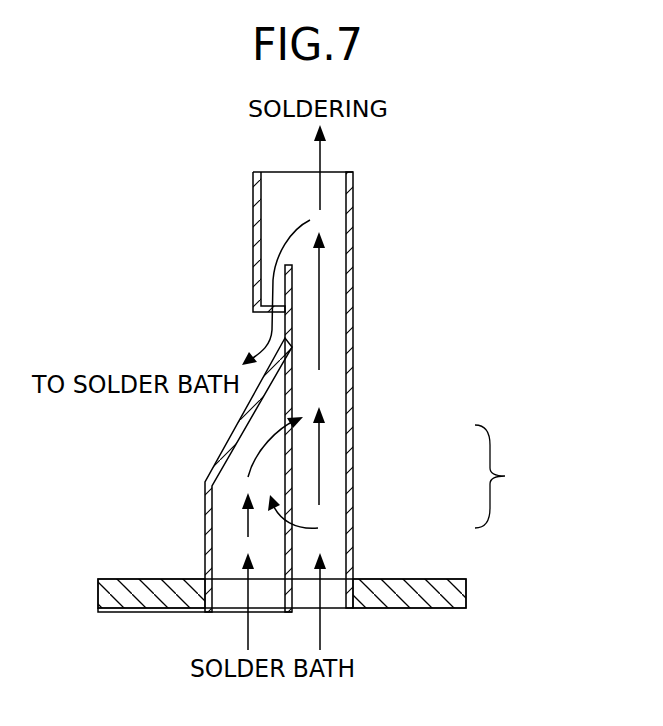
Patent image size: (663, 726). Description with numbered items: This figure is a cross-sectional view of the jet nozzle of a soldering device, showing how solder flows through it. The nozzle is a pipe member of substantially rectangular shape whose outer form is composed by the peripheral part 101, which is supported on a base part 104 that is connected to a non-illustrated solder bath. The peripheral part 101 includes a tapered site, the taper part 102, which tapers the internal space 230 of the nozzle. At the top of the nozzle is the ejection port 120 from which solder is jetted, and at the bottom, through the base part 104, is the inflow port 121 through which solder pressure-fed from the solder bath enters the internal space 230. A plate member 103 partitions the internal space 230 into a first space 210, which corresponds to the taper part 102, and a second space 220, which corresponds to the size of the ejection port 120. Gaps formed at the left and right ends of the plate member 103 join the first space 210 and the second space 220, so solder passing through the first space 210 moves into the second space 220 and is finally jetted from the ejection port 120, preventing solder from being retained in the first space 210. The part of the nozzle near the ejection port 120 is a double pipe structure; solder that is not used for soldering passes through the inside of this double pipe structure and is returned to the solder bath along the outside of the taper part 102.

The peripheral part 101 is at (353, 218).
The taper part 102 is at (222, 452).
The plate member 103 is at (292, 394).
The base part 104 is at (455, 597).
The ejection port 120 is at (345, 157).
The inflow port 121 is at (345, 623).
The first space 210 is at (305, 541).
The second space 220 is at (332, 453).
The internal space 230 is at (512, 476).